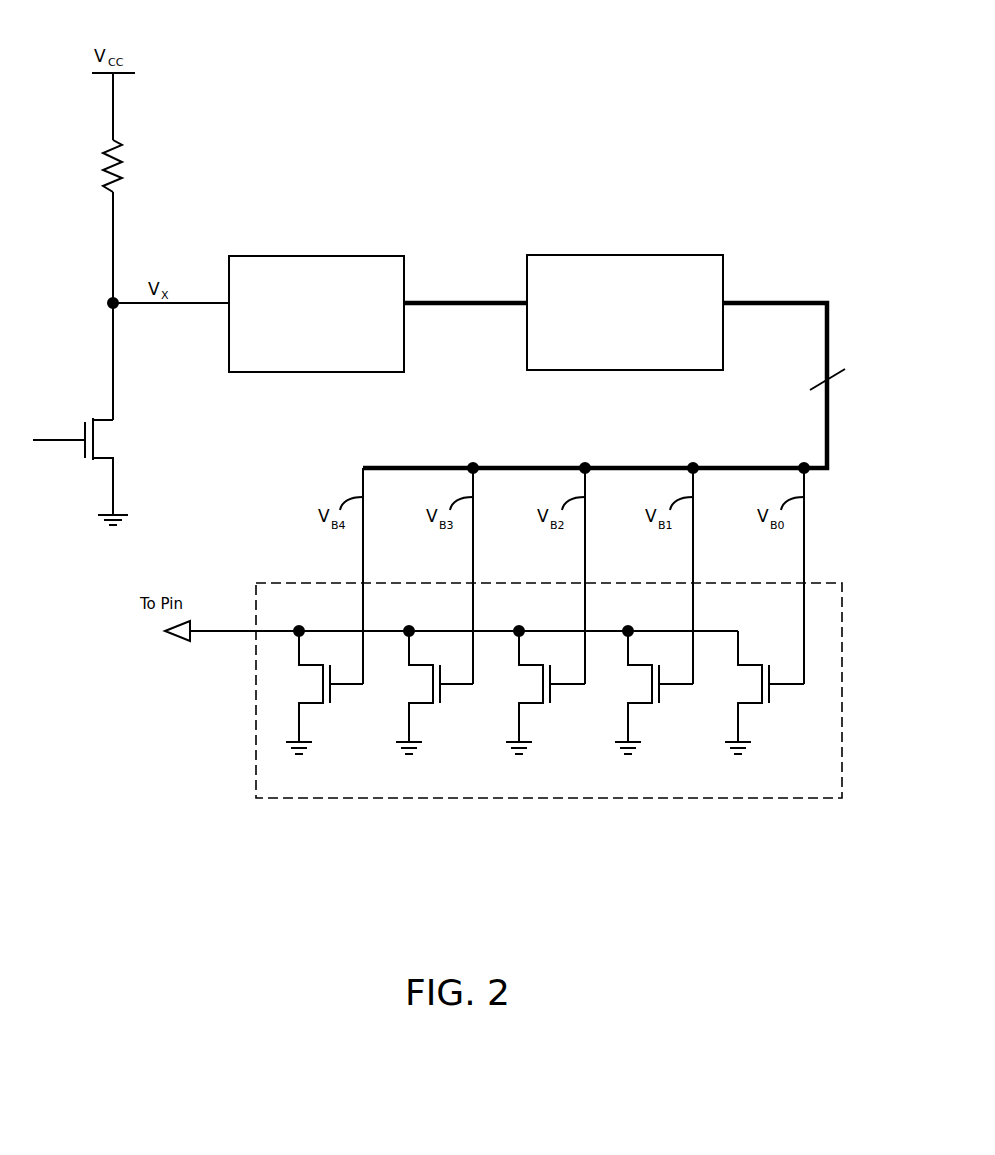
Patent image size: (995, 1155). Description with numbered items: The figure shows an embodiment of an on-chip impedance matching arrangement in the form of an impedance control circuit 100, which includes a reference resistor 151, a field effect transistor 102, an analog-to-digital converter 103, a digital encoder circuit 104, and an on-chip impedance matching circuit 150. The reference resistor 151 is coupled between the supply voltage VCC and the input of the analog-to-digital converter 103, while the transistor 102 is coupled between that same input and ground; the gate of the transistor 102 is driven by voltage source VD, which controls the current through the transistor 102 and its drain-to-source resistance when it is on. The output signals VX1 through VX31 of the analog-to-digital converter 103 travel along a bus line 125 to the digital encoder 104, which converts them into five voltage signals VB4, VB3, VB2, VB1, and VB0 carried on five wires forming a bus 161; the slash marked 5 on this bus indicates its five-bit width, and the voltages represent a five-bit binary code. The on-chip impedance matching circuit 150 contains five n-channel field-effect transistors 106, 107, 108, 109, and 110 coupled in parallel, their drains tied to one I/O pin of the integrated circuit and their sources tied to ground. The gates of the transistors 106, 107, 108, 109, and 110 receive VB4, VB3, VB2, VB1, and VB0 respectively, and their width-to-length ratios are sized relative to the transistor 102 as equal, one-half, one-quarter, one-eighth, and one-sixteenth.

The impedance control circuit 100 is at (650, 82).
The field effect transistor 102 is at (83, 454).
The analog-to-digital converter 103 is at (327, 255).
The digital encoder circuit 104 is at (630, 254).
The bus line 125 is at (433, 302).
The bus 161 is at (778, 301).
The bus width indicator 5 is at (831, 383).
The reference resistor 151 is at (107, 162).
The on-chip impedance matching circuit 150 is at (256, 775).
The n-channel field-effect transistor 106 is at (332, 696).
The n-channel field-effect transistor 107 is at (442, 696).
The n-channel field-effect transistor 108 is at (552, 696).
The n-channel field-effect transistor 109 is at (660, 695).
The n-channel field-effect transistor 110 is at (770, 695).